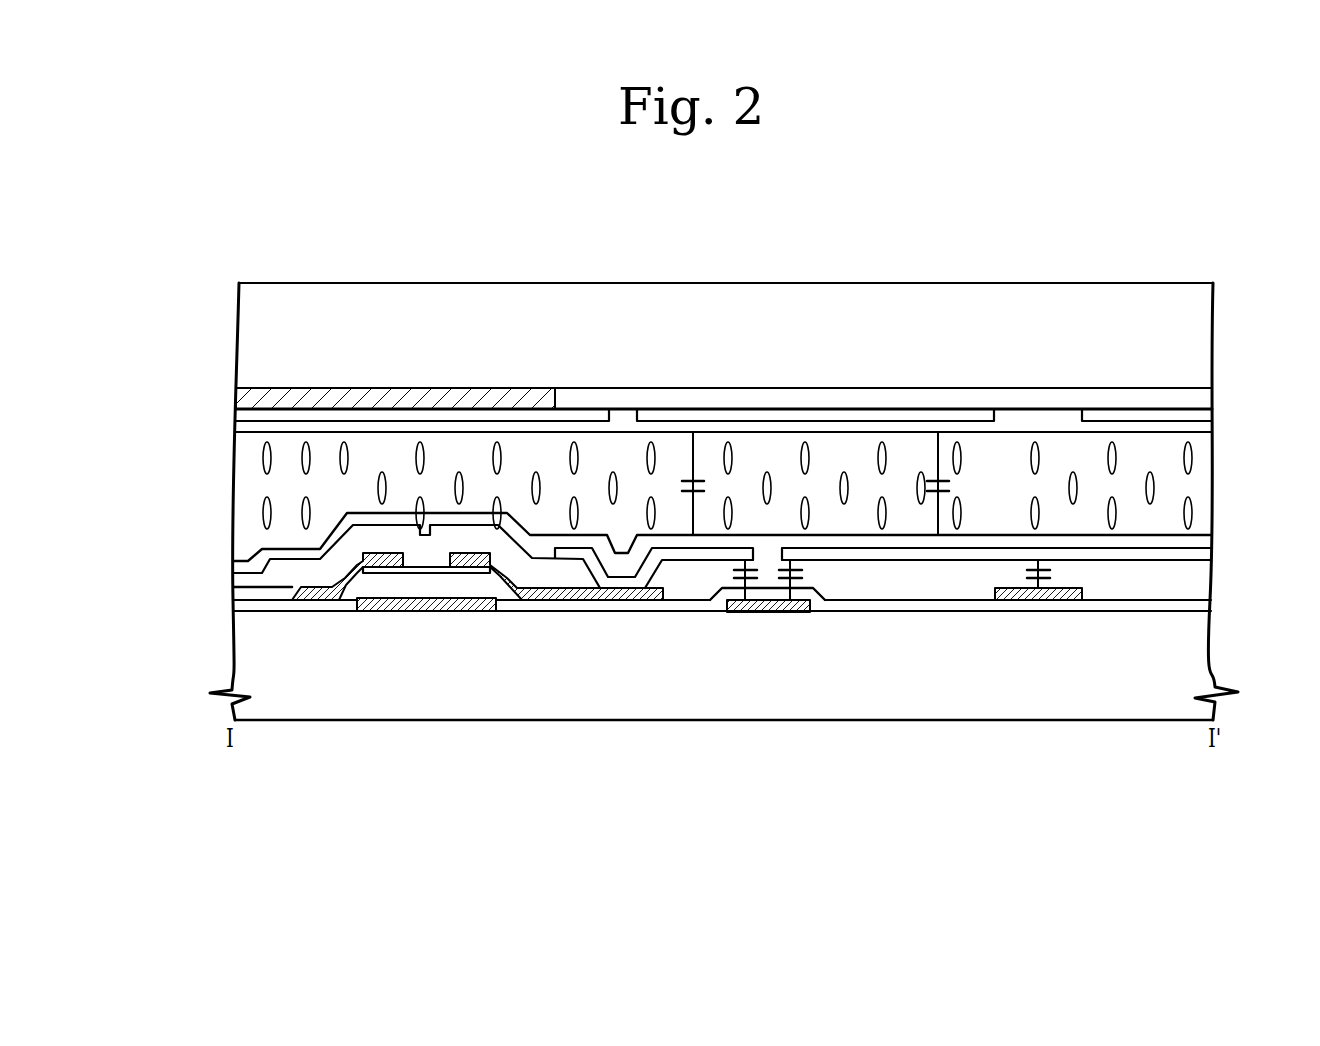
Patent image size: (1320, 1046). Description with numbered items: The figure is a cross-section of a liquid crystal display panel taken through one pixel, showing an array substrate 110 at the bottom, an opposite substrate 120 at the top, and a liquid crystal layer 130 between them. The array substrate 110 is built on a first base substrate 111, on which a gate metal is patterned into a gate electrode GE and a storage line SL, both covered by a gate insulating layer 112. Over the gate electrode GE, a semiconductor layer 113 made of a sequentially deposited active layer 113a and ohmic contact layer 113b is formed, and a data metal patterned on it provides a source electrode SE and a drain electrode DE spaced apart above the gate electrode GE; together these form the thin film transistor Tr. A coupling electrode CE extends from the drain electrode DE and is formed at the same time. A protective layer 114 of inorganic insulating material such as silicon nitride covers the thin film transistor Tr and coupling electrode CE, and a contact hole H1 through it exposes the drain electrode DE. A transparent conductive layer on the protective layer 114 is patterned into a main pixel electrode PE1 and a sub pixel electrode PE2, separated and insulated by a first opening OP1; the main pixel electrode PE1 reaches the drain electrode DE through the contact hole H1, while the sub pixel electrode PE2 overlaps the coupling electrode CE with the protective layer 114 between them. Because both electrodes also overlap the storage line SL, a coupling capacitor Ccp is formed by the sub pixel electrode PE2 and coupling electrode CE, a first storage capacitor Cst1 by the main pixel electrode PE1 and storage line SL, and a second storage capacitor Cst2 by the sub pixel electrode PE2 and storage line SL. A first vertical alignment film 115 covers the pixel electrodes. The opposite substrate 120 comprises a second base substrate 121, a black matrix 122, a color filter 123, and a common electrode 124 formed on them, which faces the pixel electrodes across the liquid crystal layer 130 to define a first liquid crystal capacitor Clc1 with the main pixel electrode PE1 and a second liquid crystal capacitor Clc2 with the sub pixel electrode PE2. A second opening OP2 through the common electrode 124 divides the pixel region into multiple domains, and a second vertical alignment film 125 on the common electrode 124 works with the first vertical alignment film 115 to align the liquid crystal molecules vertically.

The array substrate 110 is at (132, 550).
The first base substrate 111 is at (252, 660).
The gate insulating layer 112 is at (252, 606).
The semiconductor layer 113 is at (128, 493).
The active layer 113a is at (357, 578).
The ohmic contact layer 113b is at (350, 570).
The protective layer 114 is at (253, 583).
The first vertical alignment film 115 is at (250, 561).
The opposite substrate 120 is at (132, 323).
The second base substrate 121 is at (247, 335).
The black matrix 122 is at (240, 392).
The color filter 123 is at (1198, 398).
The common electrode 124 is at (250, 411).
The second vertical alignment film 125 is at (250, 428).
The liquid crystal layer 130 is at (256, 458).
The first opening OP1 is at (768, 553).
The second opening OP2 is at (618, 427).
The first liquid crystal capacitor Clc1 is at (716, 483).
The second liquid crystal capacitor Clc2 is at (962, 483).
The main pixel electrode PE1 is at (682, 563).
The sub pixel electrode PE2 is at (1198, 555).
The source electrode SE is at (330, 600).
The gate electrode GE is at (397, 612).
The drain electrode DE is at (547, 597).
The contact hole H1 is at (618, 583).
The thin film transistor Tr is at (477, 773).
The storage line SL is at (770, 612).
The coupling electrode CE is at (1018, 597).
The first storage capacitor Cst1 is at (719, 567).
The second storage capacitor Cst2 is at (816, 568).
The coupling capacitor Ccp is at (1065, 568).